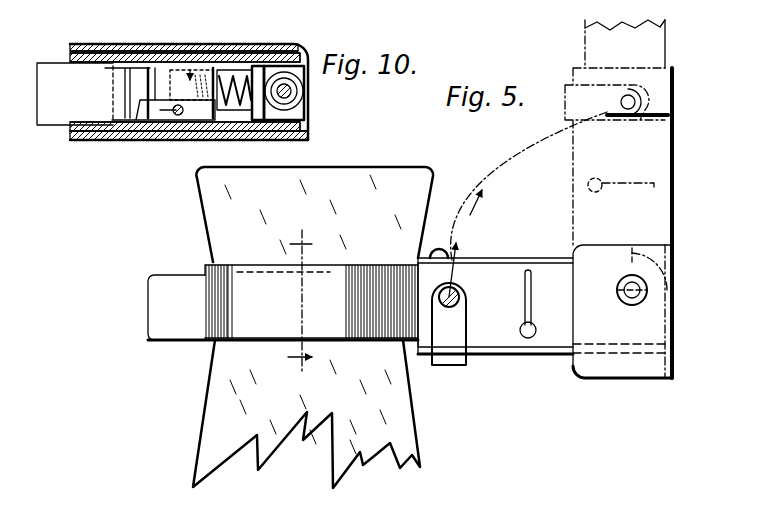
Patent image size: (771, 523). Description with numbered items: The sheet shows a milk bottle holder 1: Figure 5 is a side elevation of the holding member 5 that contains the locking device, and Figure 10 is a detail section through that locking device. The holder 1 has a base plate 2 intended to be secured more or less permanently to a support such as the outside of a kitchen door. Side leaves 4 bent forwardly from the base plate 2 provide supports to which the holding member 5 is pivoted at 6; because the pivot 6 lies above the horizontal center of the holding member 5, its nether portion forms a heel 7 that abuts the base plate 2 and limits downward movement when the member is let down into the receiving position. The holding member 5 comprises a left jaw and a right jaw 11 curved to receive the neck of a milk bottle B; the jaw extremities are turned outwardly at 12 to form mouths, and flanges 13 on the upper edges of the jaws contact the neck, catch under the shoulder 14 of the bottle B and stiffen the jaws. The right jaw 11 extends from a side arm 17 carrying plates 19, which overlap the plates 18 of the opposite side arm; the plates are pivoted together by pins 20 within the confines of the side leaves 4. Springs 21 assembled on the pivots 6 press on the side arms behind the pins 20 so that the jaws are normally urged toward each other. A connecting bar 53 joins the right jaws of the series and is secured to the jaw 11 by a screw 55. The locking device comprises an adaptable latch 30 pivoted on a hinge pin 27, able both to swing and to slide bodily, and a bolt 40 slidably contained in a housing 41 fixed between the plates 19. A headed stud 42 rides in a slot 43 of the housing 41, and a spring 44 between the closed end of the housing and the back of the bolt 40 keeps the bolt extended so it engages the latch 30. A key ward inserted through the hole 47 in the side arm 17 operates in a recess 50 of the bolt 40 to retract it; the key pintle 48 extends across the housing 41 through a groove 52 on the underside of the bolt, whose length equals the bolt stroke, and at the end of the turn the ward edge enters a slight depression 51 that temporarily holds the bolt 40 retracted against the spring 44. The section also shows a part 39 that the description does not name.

In FIG. 5, the holder 1 is at (655, 105).
In FIG. 5, the base plate 2 is at (673, 165).
In FIG. 5, the side leaves 4 is at (612, 370).
In FIG. 5, the holding member 5 is at (488, 370).
In FIG. 10, the pivot 6 is at (303, 96).
In FIG. 5, the pivot 6 is at (678, 290).
In FIG. 5, the heel 7 is at (388, 265).
In FIG. 5, the right jaw 11 is at (245, 307).
In FIG. 5, the outwardly turned extremities 12 is at (148, 303).
In FIG. 5, the flanges 13 is at (237, 267).
In FIG. 5, the shoulder 14 is at (255, 262).
In FIG. 5, the side arm 17 is at (497, 327).
In FIG. 10, the plates 18 is at (284, 45).
In FIG. 5, the plates 18 is at (505, 258).
In FIG. 10, the plates 19 is at (296, 51).
In FIG. 5, the pins 20 is at (612, 244).
In FIG. 10, the springs 21 is at (297, 108).
In FIG. 5, the hinge pin 27 is at (436, 250).
In FIG. 10, the latch 30 is at (57, 112).
In FIG. 10, the partition 39 is at (134, 75).
In FIG. 10, the bolt 40 is at (202, 78).
In FIG. 10, the housing 41 is at (258, 64).
In FIG. 10, the headed stud 42 is at (180, 70).
In FIG. 10, the slot 43 is at (194, 66).
In FIG. 10, the spring 44 is at (242, 68).
In FIG. 5, the hole 47 is at (532, 278).
In FIG. 10, the pintle 48 is at (178, 117).
In FIG. 10, the recess 50 is at (157, 75).
In FIG. 10, the depression 51 is at (184, 112).
In FIG. 10, the groove 52 is at (160, 110).
In FIG. 5, the connecting bar 53 is at (436, 365).
In FIG. 5, the screw 55 is at (452, 290).
In FIG. 5, the milk bottle B is at (222, 397).